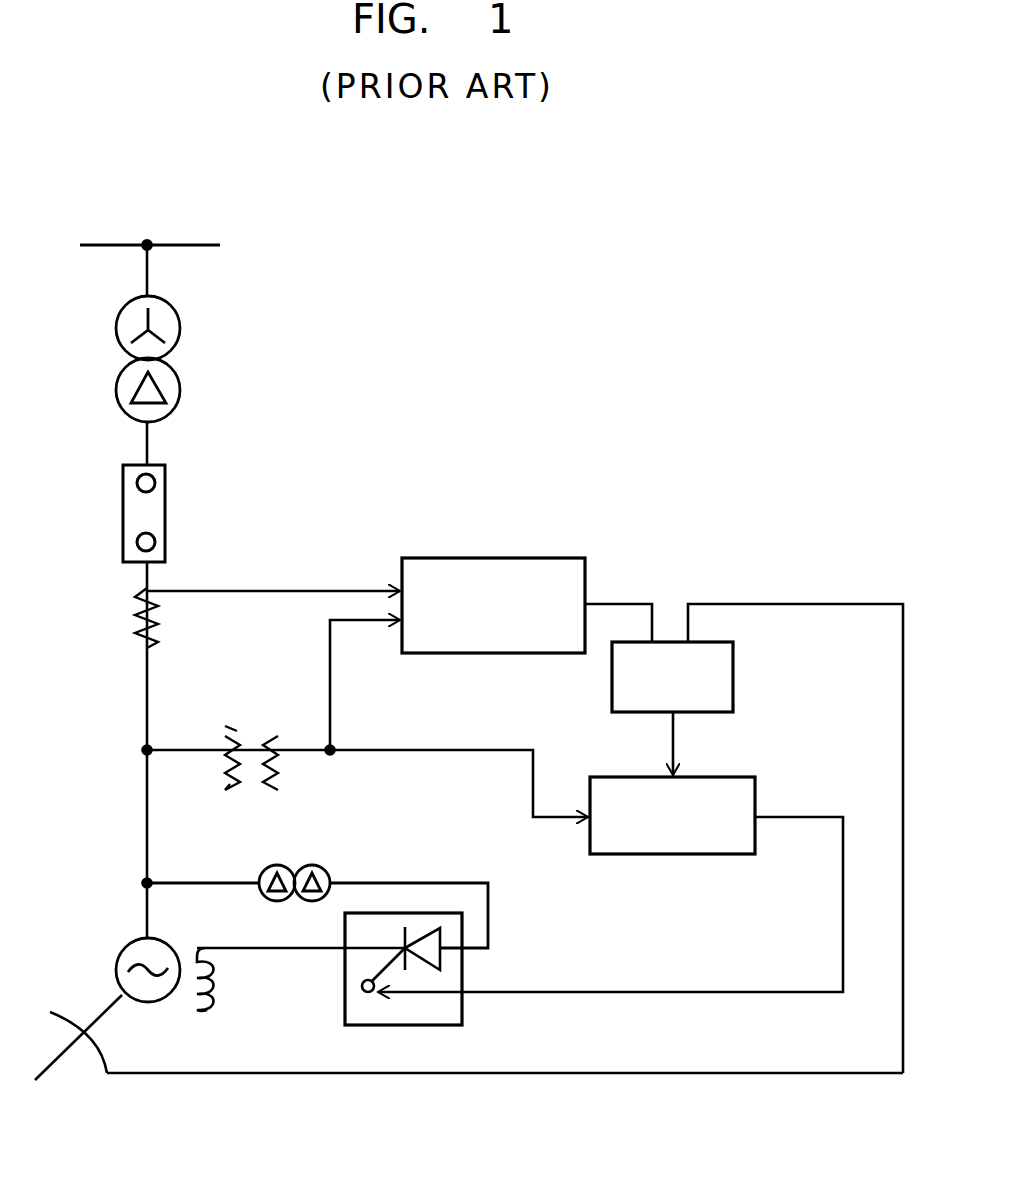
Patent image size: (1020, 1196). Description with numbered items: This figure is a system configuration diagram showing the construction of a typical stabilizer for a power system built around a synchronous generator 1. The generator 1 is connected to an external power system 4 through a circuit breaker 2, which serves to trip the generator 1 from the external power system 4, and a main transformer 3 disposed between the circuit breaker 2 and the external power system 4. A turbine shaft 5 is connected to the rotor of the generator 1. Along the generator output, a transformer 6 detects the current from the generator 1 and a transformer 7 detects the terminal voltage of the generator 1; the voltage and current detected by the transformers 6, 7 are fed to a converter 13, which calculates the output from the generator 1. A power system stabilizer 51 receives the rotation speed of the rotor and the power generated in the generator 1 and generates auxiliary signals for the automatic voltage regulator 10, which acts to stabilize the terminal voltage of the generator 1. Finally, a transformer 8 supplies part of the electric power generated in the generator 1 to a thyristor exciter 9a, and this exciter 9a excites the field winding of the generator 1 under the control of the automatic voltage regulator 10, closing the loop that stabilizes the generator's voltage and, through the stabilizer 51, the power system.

The synchronous generator 1 is at (118, 951).
The circuit breaker 2 is at (123, 498).
The main transformer 3 is at (118, 321).
The external power system 4 is at (185, 245).
The turbine shaft 5 is at (60, 1060).
The current detecting transformer 6 is at (140, 626).
The voltage detecting transformer 7 is at (238, 739).
The exciter supply transformer 8 is at (312, 866).
The thyristor exciter 9a is at (345, 1000).
The automatic voltage regulator 10 is at (730, 777).
The converter 13 is at (508, 558).
The power system stabilizer 51 is at (733, 665).